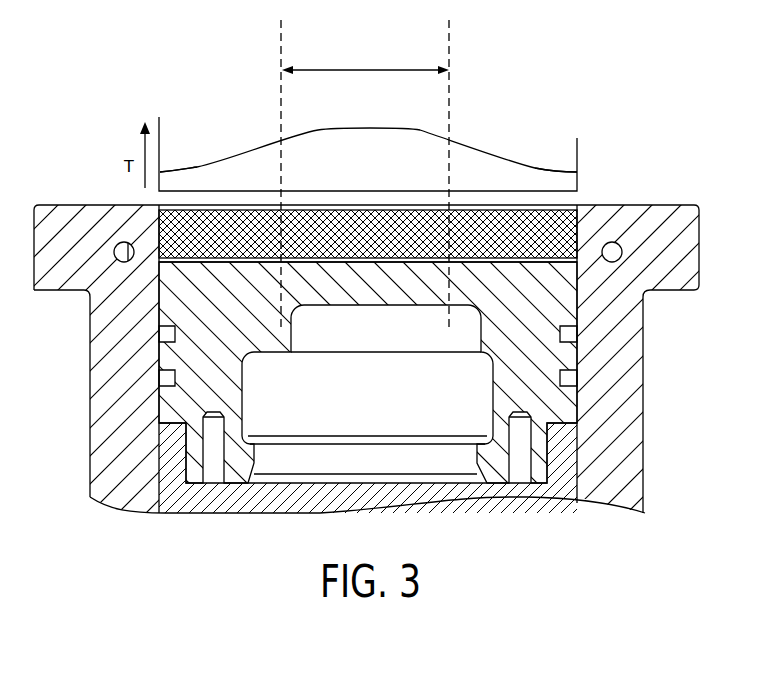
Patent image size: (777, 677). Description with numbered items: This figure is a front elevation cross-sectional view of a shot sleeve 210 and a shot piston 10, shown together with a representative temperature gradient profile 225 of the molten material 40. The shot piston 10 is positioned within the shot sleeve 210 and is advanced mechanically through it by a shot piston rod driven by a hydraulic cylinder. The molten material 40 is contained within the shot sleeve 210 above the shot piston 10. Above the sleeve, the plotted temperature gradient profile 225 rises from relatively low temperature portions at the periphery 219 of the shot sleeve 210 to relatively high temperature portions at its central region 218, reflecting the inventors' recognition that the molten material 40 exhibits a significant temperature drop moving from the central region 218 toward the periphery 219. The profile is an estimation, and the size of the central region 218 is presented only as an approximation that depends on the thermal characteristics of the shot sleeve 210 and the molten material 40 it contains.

The shot piston 10 is at (560, 353).
The molten material 40 is at (570, 257).
The shot sleeve 210 is at (683, 258).
The central region 218 is at (365, 67).
The periphery 219 is at (171, 158).
The temperature gradient profile 225 is at (487, 150).